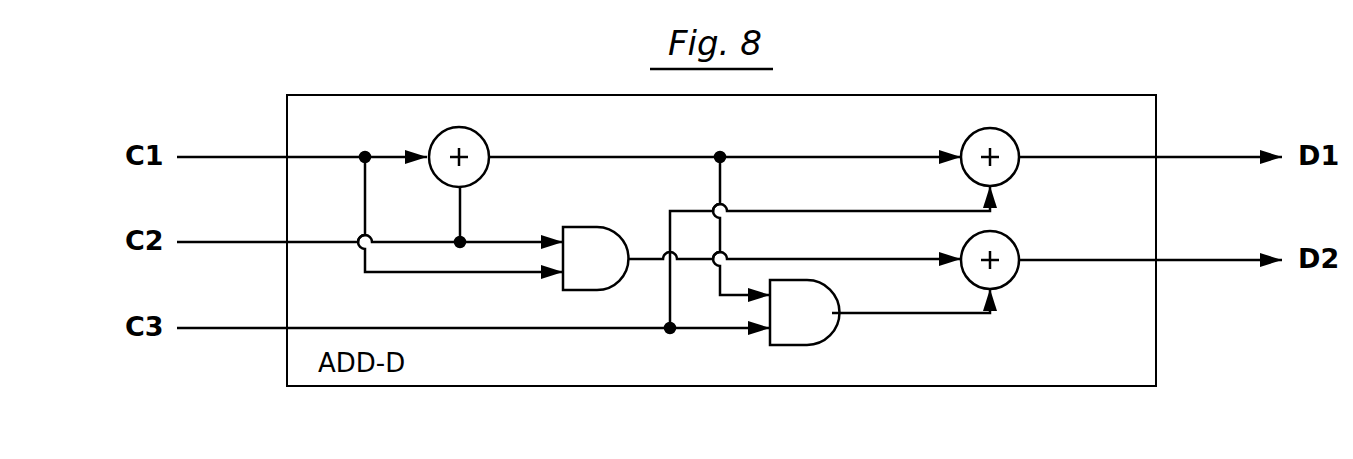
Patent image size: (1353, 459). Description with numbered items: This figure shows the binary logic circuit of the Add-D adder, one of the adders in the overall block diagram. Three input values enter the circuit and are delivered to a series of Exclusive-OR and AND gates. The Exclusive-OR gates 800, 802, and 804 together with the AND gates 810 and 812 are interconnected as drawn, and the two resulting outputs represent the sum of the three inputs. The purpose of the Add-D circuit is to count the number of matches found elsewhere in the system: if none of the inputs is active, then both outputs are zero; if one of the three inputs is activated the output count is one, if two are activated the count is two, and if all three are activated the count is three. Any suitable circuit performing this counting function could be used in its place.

The Exclusive-OR gate 800 is at (484, 139).
The Exclusive-OR gate 802 is at (1013, 136).
The Exclusive-OR gate 804 is at (1013, 282).
The AND gate 810 is at (585, 226).
The AND gate 812 is at (820, 338).